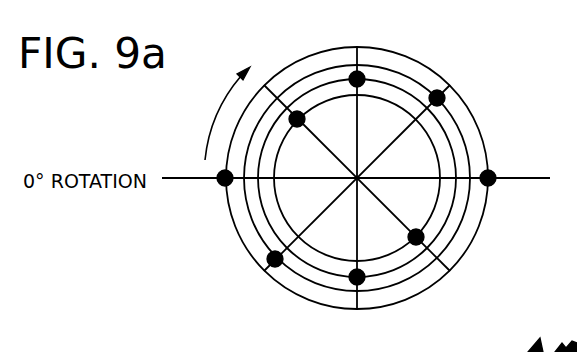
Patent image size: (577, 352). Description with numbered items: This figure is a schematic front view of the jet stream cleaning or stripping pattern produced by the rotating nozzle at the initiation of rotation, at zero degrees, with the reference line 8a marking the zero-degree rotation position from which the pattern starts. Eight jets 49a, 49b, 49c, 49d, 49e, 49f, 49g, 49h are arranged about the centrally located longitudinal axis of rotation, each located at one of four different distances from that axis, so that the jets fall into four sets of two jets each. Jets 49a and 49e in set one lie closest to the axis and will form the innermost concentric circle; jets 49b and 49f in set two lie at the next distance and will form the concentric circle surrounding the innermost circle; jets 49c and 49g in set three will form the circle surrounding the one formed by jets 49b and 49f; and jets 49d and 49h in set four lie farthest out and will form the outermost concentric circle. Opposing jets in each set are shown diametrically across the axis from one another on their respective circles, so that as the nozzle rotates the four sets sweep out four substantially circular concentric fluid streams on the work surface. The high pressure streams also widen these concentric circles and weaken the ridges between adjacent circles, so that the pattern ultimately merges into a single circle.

The reference axis of FIG. 8a is at (177, 179).
The jet 49a is at (294, 111).
The jet 49b is at (361, 74).
The jet 49c is at (444, 95).
The jet 49d is at (493, 173).
The jet 49e is at (413, 245).
The jet 49f is at (352, 283).
The jet 49g is at (269, 259).
The jet 49h is at (219, 176).